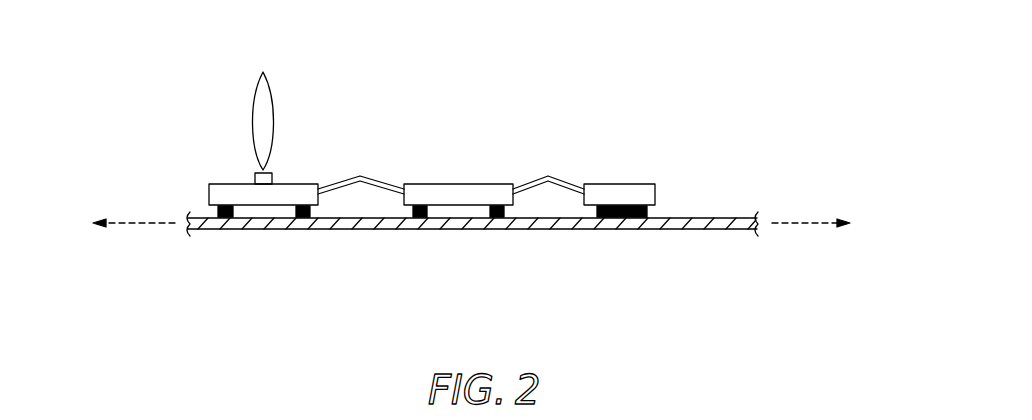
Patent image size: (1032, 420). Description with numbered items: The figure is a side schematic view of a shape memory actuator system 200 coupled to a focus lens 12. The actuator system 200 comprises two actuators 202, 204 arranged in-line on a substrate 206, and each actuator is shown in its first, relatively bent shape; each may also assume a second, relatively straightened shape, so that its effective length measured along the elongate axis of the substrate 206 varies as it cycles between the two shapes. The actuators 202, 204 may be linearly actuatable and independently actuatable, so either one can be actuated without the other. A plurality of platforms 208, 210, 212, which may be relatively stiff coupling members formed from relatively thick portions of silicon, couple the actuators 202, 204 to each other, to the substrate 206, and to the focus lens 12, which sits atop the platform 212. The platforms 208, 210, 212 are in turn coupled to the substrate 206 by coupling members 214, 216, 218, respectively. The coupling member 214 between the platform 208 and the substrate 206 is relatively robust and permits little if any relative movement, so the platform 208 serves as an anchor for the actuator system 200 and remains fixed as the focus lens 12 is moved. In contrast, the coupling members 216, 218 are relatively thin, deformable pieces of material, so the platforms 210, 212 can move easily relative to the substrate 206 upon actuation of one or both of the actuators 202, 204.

The actuator system 200 is at (481, 134).
The focus lens 12 is at (270, 88).
The platform 212 is at (289, 184).
The actuator 204 is at (384, 183).
The platform 210 is at (458, 184).
The actuator 202 is at (560, 182).
The platform 208 is at (620, 184).
The coupling member 214 is at (647, 212).
The substrate 206 is at (717, 219).
The coupling member 218 is at (312, 212).
The coupling member 216 is at (503, 210).